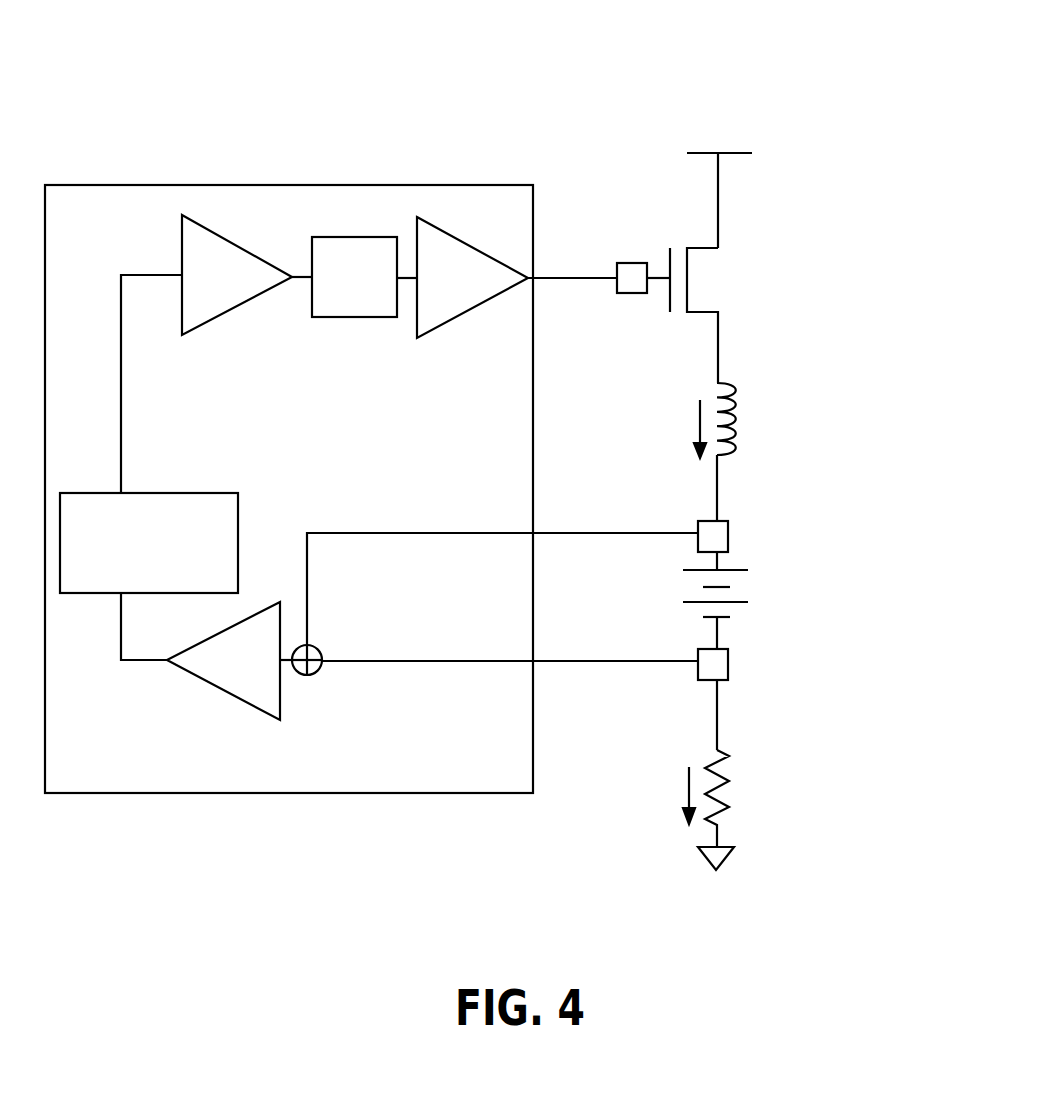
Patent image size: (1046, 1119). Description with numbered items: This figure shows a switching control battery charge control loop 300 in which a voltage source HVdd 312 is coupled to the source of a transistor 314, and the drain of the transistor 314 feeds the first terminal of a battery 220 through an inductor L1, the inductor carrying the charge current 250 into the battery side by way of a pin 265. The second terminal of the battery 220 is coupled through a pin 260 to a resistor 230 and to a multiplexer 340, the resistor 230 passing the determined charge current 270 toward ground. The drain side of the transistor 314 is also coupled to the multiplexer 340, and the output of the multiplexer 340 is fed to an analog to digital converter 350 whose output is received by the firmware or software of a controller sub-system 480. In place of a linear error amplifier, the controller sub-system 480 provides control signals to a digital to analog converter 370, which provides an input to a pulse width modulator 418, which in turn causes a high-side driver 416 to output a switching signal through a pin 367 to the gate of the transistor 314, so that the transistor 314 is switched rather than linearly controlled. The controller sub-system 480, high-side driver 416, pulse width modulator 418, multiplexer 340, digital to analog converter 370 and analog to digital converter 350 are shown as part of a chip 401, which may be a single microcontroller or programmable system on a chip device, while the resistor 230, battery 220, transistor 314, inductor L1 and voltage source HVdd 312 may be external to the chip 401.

The loop 300 is at (800, 86).
The voltage source HVdd 312 is at (725, 182).
The transistor 314 is at (662, 275).
The pin 367 is at (628, 293).
The inductor L1 is at (785, 452).
The charge current 250 is at (698, 430).
The pin 265 is at (728, 527).
The battery 220 is at (683, 634).
The pin 260 is at (728, 655).
The resistor 230 is at (772, 810).
The determined charge current 270 is at (686, 810).
The multiplexer 340 is at (357, 652).
The analog to digital converter 350 is at (262, 687).
The digital to analog converter 370 is at (234, 299).
The high-side driver 416 is at (480, 304).
The pulse width modulator 418 is at (375, 302).
The controller sub-system 480 is at (165, 582).
The chip 401 is at (412, 772).